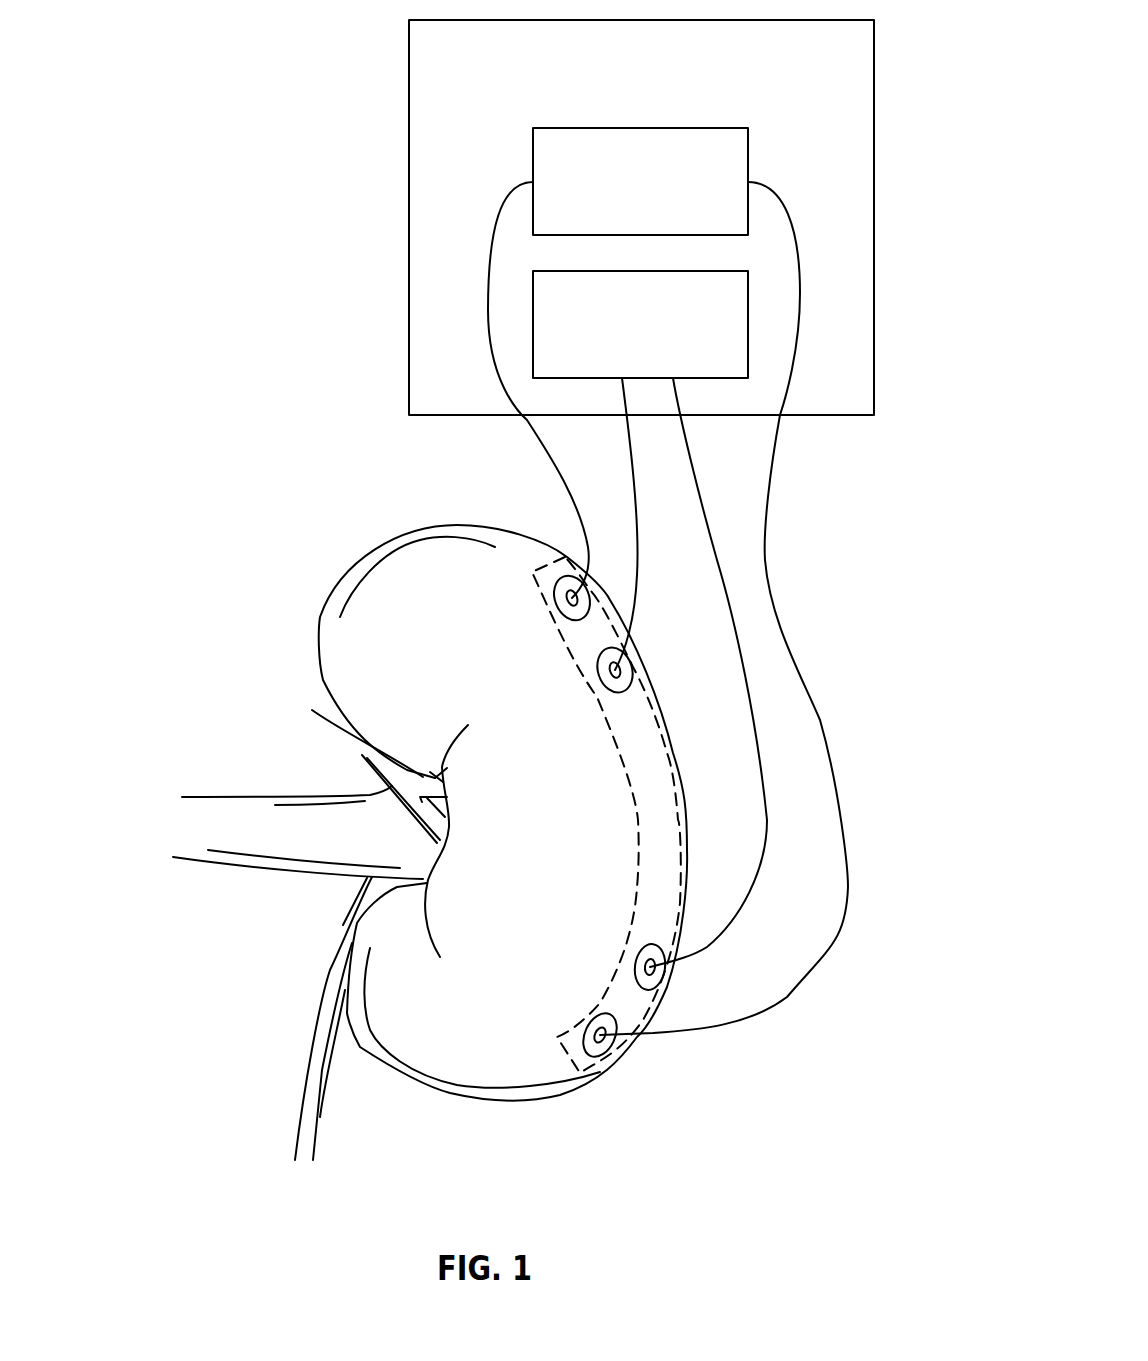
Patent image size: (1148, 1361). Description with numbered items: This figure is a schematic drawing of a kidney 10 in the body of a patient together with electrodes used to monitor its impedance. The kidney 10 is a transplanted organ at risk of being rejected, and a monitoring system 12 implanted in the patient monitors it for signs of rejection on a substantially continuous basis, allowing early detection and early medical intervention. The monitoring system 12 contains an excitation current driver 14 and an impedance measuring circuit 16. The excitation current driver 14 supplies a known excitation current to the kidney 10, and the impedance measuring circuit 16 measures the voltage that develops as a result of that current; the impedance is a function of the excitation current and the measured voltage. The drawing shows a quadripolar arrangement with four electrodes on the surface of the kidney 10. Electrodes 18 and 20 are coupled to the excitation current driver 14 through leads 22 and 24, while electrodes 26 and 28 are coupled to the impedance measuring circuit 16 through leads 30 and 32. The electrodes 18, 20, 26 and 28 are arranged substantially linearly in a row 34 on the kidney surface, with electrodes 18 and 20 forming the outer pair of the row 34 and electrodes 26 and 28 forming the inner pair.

The kidney 10 is at (318, 648).
The monitoring system 12 is at (874, 243).
The excitation current driver 14 is at (748, 142).
The impedance measuring circuit 16 is at (733, 378).
The electrode 18 is at (565, 615).
The electrode 20 is at (593, 1010).
The lead 22 is at (488, 308).
The lead 24 is at (795, 340).
The electrode 26 is at (608, 683).
The electrode 28 is at (636, 958).
The lead 30 is at (628, 460).
The lead 32 is at (698, 492).
The row 34 is at (636, 840).